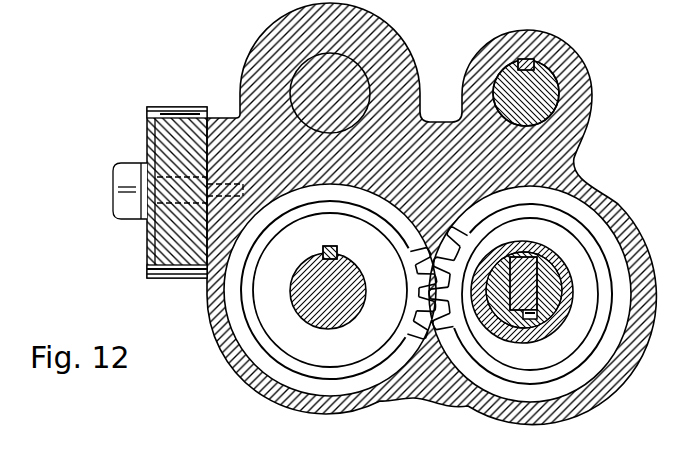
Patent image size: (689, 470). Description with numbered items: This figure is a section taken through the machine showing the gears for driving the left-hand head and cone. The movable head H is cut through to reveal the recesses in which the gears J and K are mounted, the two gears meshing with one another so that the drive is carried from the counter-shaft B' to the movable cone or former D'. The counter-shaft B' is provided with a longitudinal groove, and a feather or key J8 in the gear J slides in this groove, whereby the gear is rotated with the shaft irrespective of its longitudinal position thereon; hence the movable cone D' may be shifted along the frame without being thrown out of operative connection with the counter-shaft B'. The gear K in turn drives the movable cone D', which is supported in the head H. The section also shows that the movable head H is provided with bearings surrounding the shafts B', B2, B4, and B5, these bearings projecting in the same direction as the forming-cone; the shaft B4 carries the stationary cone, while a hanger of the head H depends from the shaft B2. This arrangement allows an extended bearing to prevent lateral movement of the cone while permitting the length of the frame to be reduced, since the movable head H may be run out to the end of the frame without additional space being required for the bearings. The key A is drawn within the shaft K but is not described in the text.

The movable head H is at (254, 67).
The shaft B5 is at (366, 67).
The shaft B2 is at (552, 70).
The gear J is at (339, 290).
The feather or key J8 is at (324, 252).
The counter-shaft B' is at (328, 302).
The movable cone or former D' is at (520, 294).
The gear K is at (522, 303).
The key A is at (523, 283).
The shaft B4 is at (553, 311).